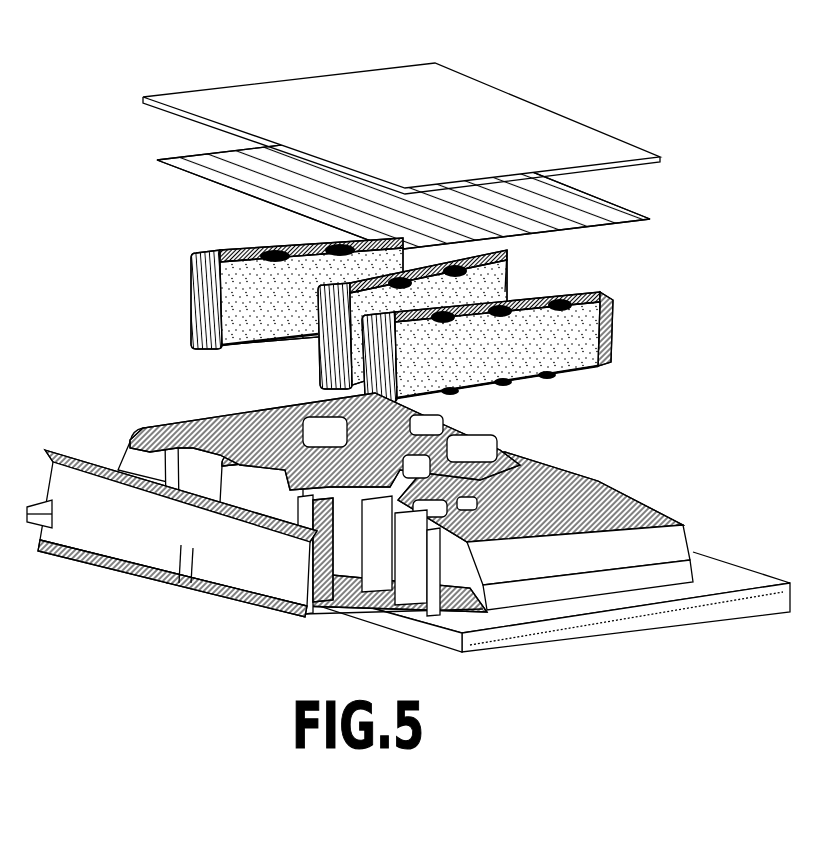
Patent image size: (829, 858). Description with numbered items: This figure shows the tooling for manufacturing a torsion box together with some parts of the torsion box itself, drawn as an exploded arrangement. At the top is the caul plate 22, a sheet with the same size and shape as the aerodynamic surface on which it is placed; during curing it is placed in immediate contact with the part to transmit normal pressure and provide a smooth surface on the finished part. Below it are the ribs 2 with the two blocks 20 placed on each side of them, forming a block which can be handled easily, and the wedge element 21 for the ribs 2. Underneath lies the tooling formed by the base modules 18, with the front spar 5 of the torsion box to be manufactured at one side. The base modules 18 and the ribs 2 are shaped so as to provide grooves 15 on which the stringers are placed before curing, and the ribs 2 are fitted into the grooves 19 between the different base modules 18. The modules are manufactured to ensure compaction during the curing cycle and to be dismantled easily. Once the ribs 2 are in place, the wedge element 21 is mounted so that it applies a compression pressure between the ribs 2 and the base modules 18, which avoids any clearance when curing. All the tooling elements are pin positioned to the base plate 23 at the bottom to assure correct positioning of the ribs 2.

The rib 2 is at (188, 278).
The front spar 5 is at (93, 533).
The groove 15 is at (212, 420).
The base module 18 is at (143, 445).
The groove 19 is at (380, 567).
The block 20 is at (188, 275).
The wedge element 21 is at (190, 257).
The caul plate 22 is at (488, 120).
The base plate 23 is at (480, 640).